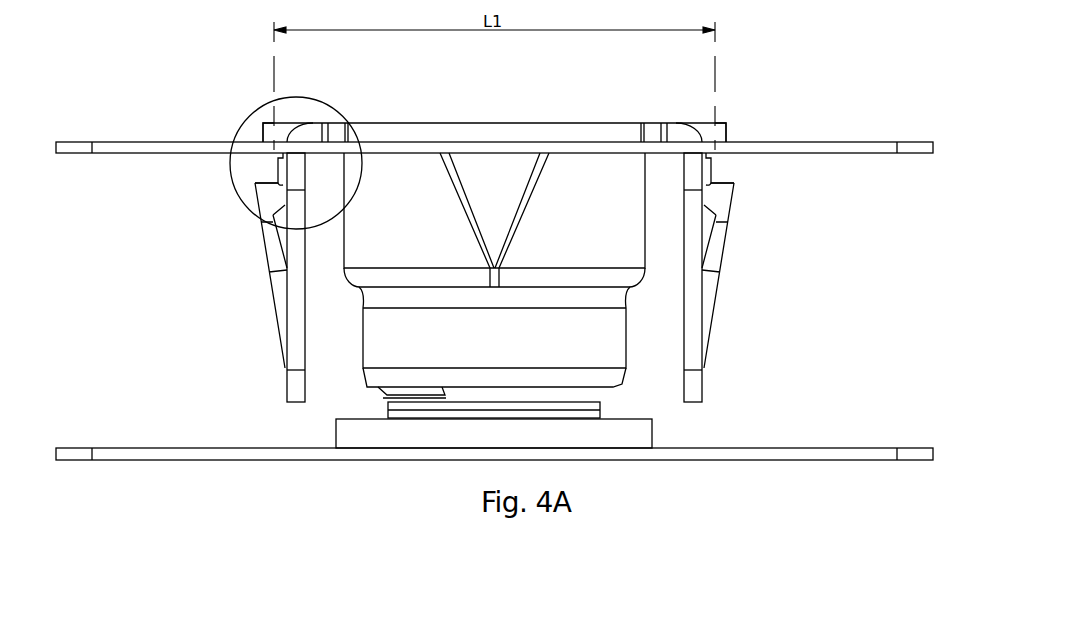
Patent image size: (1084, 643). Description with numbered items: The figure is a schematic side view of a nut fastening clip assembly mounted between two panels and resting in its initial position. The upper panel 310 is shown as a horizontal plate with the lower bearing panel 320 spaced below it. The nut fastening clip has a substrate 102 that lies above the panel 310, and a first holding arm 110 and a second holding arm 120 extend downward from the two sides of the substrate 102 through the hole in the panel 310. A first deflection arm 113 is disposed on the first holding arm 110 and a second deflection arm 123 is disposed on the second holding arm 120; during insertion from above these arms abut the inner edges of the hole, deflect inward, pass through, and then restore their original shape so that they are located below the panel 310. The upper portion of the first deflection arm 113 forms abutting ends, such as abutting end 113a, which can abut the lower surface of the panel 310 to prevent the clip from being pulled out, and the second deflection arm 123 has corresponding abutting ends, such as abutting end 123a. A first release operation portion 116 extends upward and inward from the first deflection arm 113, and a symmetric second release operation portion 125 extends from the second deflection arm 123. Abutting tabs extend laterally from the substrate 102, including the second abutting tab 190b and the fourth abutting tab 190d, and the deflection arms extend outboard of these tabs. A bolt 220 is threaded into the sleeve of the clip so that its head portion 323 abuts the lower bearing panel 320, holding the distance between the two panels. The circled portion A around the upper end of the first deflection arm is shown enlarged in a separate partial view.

The substrate 102 is at (465, 128).
The first holding arm 110 is at (298, 385).
The first deflection arm 113 is at (283, 300).
The abutting end 113a is at (277, 185).
The first release operation portion 116 is at (277, 172).
The second holding arm 120 is at (692, 385).
The second deflection arm 123 is at (714, 300).
The abutting end 123a is at (714, 186).
The second release operation portion 125 is at (707, 182).
The second abutting tab 190b is at (267, 127).
The fourth abutting tab 190d is at (720, 124).
The bolt 220 is at (582, 412).
The panel 310 is at (798, 141).
The lower bearing panel 320 is at (795, 448).
The head portion 323 is at (613, 437).
The portion A is at (337, 112).